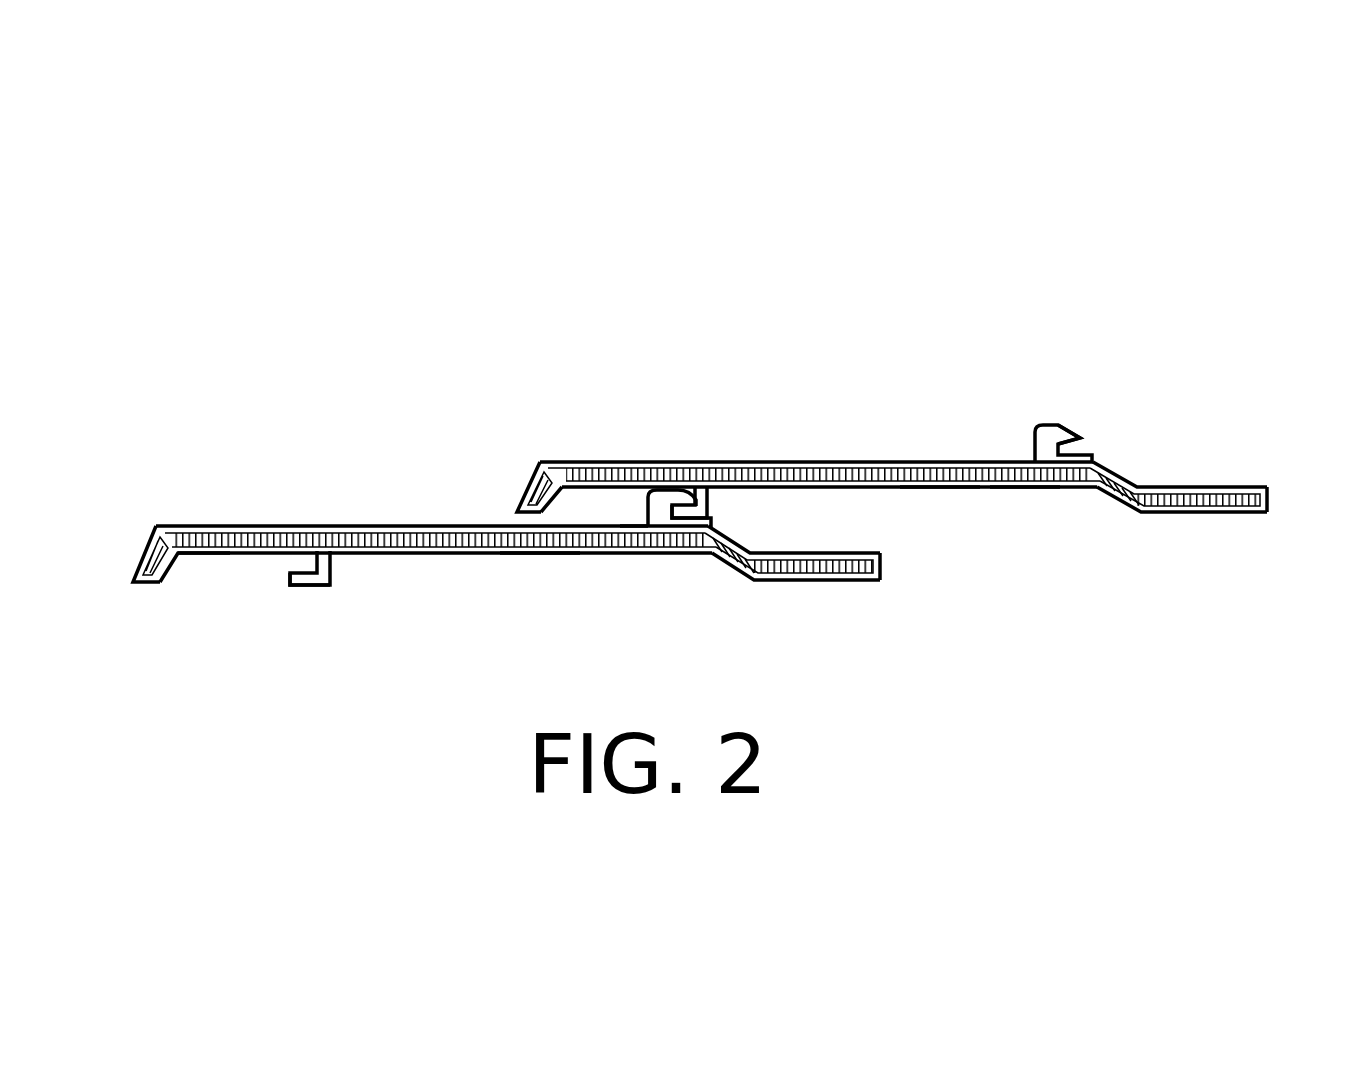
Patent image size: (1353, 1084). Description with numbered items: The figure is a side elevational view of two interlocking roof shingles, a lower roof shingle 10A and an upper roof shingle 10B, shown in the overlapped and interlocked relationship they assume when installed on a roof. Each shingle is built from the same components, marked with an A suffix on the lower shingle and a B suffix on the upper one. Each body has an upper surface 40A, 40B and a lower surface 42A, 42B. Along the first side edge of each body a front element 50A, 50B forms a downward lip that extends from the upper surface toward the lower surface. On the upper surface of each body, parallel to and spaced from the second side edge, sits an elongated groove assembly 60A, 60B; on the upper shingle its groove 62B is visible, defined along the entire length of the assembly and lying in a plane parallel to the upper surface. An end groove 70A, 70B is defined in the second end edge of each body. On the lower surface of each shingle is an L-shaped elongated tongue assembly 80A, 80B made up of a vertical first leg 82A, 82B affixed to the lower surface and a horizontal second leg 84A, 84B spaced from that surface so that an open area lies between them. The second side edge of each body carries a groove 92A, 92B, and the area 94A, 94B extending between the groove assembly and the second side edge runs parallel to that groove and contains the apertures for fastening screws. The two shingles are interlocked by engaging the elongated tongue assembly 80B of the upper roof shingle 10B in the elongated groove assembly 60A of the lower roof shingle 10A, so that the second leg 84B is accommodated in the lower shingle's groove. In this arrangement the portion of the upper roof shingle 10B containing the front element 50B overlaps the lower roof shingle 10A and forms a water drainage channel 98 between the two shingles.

The lower roof shingle 10A is at (378, 385).
The upper roof shingle 10B is at (807, 345).
The upper surface 40A is at (262, 526).
The upper surface 40B is at (882, 462).
The lower surface 42A is at (192, 555).
The lower surface 42B is at (938, 488).
The front element 50A is at (142, 545).
The front element 50B is at (527, 470).
The elongated groove assembly 60A is at (636, 470).
The elongated groove assembly 60B is at (1060, 390).
The groove 62B is at (1080, 443).
The end groove 70A is at (538, 552).
The end groove 70B is at (1022, 478).
The elongated tongue assembly 80A is at (327, 650).
The elongated tongue assembly 80B is at (781, 517).
The first leg 82A is at (332, 567).
The first leg 82B is at (708, 487).
The second leg 84A is at (292, 585).
The second leg 84B is at (697, 520).
The groove 92A is at (882, 565).
The groove 92B is at (1267, 498).
The area 94A is at (770, 555).
The area 94B is at (1215, 485).
The water drainage channel 98 is at (633, 517).